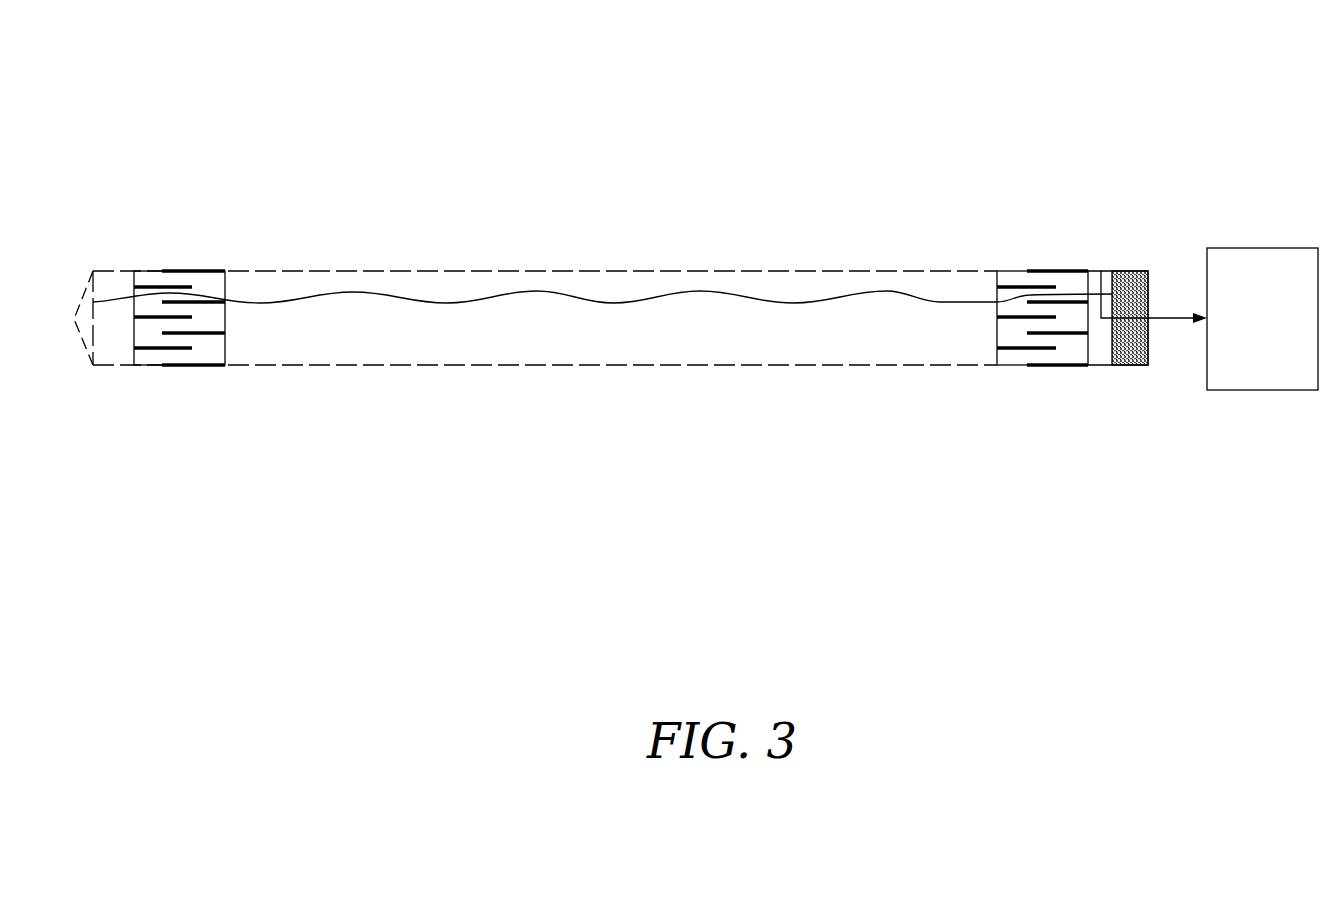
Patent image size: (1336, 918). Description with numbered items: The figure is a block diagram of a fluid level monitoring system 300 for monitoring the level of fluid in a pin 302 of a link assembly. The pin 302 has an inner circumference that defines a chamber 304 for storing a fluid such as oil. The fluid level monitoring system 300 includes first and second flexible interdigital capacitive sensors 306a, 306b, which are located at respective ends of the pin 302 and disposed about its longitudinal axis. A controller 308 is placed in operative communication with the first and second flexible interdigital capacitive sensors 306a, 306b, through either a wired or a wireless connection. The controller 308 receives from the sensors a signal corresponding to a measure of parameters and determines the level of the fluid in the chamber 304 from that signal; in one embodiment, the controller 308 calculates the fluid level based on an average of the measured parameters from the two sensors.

The fluid level monitoring system 300 is at (958, 82).
The pin 302 is at (787, 271).
The chamber 304 is at (333, 282).
The first flexible interdigital capacitive sensor 306a is at (193, 271).
The second flexible interdigital capacitive sensor 306b is at (1058, 271).
The controller 308 is at (1252, 275).